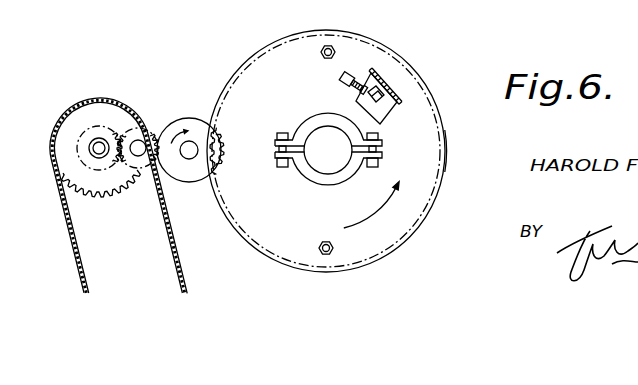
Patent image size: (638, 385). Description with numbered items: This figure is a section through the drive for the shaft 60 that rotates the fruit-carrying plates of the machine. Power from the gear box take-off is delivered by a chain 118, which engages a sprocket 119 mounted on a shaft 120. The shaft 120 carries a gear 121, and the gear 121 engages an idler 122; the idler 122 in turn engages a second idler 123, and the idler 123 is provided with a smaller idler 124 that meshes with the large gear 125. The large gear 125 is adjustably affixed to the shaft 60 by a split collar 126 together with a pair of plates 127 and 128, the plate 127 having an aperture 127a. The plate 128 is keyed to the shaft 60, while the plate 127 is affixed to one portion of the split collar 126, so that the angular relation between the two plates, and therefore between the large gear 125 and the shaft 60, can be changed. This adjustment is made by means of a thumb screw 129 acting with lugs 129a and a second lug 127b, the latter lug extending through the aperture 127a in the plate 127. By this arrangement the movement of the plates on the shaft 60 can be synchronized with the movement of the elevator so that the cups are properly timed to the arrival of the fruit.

The shaft 60 is at (337, 162).
The chain 118 is at (72, 242).
The sprocket 119 is at (101, 190).
The shaft 120 is at (98, 147).
The gear 121 is at (93, 128).
The idler 122 is at (149, 128).
The second idler 123 is at (188, 183).
The smaller idler 124 is at (204, 121).
The large gear 125 is at (378, 31).
The split collar 126 is at (382, 143).
The plate 127 is at (397, 58).
The aperture 127a is at (444, 138).
The toothed friction band 127b is at (384, 91).
The plate 128 is at (399, 113).
The thumb screw 129 is at (342, 79).
The lug 129a is at (357, 88).